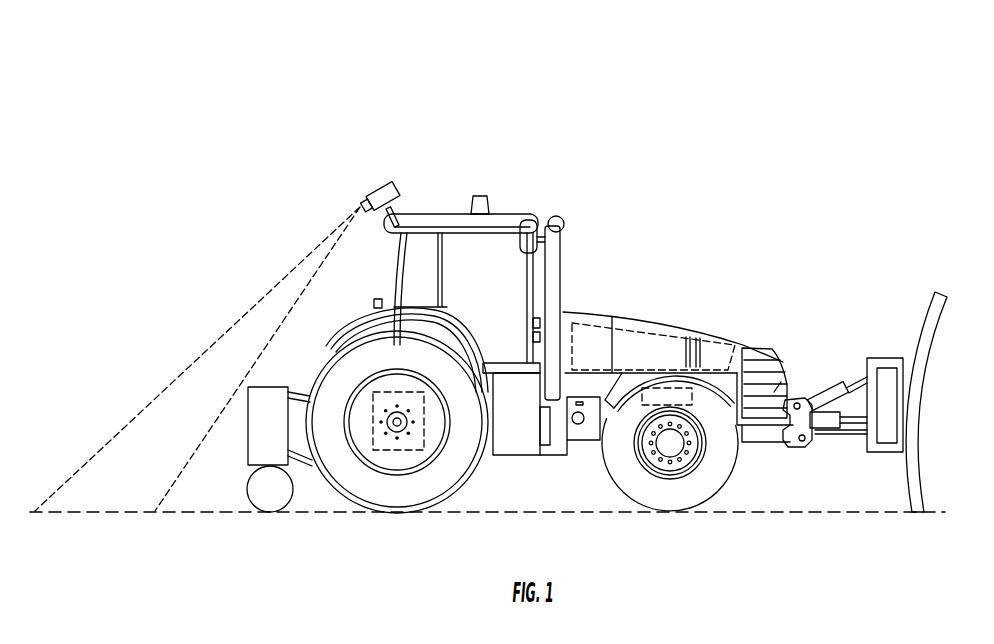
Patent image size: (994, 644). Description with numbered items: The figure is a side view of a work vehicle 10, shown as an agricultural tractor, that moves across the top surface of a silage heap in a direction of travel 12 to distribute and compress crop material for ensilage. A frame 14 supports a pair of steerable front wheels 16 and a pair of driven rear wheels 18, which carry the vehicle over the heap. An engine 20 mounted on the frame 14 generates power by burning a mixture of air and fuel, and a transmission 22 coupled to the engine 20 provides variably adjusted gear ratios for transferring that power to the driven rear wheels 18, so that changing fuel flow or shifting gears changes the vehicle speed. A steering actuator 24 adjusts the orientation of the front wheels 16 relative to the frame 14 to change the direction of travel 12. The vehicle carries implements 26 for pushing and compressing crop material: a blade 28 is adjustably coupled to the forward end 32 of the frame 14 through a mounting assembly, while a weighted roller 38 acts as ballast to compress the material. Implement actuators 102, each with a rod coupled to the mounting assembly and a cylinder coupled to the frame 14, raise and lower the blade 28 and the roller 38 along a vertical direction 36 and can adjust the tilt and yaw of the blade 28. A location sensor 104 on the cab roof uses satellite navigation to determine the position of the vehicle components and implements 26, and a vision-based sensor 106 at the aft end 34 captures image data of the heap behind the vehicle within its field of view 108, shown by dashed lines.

The work vehicle 10 is at (280, 100).
The direction of travel 12 is at (753, 287).
The frame 14 is at (579, 447).
The front wheels 16 is at (618, 488).
The rear wheels 18 is at (416, 462).
The engine 20 is at (645, 330).
The transmission 22 is at (403, 450).
The steering actuator 24 is at (698, 400).
The implement 26 is at (256, 518).
The blade 28 is at (915, 470).
The forward end 32 is at (792, 354).
The aft end 34 is at (327, 494).
The vertical direction 36 is at (843, 80).
The weighted roller 38 is at (248, 433).
The implement actuator 102 is at (830, 398).
The location sensor 104 is at (481, 195).
The vision-based sensor 106 is at (380, 190).
The field of view 108 is at (275, 343).